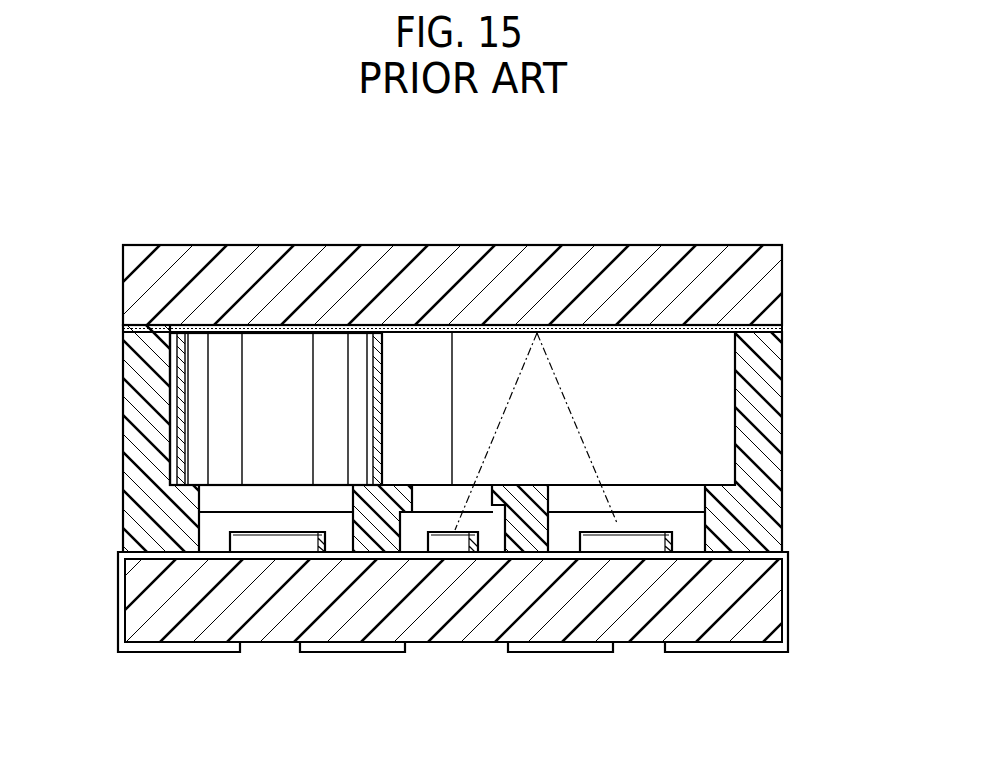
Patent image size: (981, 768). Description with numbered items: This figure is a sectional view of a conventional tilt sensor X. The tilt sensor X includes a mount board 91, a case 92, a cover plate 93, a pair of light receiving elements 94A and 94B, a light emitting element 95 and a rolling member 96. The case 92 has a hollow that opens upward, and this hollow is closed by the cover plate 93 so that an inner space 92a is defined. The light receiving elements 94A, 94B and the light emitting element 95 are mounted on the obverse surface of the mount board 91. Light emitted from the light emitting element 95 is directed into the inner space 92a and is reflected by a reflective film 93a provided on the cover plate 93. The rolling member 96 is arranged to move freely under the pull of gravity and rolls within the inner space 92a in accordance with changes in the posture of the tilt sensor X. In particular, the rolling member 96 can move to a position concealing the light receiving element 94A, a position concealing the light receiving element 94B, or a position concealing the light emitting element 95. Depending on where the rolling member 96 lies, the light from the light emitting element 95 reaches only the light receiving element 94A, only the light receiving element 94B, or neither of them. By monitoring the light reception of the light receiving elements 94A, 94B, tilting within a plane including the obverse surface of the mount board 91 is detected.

The tilt sensor X is at (128, 222).
The mount board 91 is at (760, 593).
The case 92 is at (737, 435).
The inner space 92a is at (667, 416).
The cover plate 93 is at (782, 298).
The reflective film 93a is at (687, 330).
The light receiving element 94A is at (287, 542).
The light receiving element 94B is at (618, 542).
The light emitting element 95 is at (440, 547).
The rolling member 96 is at (290, 350).